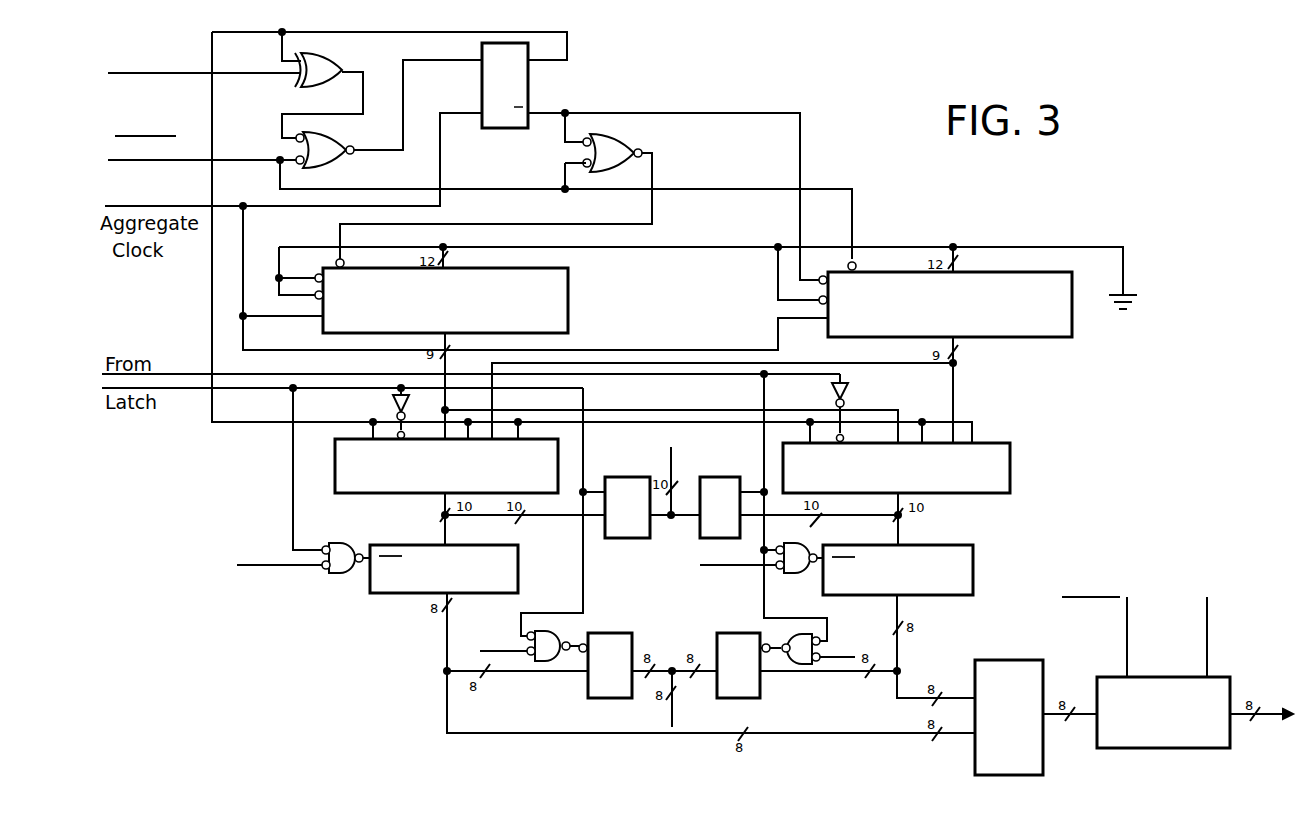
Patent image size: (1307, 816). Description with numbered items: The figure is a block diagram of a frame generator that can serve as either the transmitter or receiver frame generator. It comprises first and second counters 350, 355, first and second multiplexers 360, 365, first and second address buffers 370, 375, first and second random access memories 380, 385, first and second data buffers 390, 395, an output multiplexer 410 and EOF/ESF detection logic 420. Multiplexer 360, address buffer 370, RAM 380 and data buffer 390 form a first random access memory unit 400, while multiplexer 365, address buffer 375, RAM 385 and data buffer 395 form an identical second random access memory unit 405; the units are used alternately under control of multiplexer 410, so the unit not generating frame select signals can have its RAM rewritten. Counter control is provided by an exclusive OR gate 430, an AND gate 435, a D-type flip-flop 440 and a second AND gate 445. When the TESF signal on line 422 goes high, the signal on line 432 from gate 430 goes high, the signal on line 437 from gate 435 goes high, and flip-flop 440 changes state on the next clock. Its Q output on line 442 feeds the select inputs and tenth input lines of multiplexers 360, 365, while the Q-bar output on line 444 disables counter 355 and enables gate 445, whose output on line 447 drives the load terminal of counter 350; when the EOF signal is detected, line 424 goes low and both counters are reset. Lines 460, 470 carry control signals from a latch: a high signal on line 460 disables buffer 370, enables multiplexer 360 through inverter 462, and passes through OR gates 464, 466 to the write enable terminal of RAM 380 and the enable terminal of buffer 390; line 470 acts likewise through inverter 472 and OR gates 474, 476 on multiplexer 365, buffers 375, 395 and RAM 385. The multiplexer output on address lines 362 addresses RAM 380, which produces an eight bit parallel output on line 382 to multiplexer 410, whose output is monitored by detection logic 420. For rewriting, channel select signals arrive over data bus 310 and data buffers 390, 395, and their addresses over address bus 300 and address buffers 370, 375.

The address bus 300 is at (669, 466).
The data bus 310 is at (668, 708).
The first counter 350 is at (568, 300).
The second counter 355 is at (1072, 308).
The first multiplexer 360 is at (366, 493).
The address lines 362 is at (444, 514).
The second multiplexer 365 is at (1010, 468).
The first address buffer 370 is at (625, 484).
The second address buffer 375 is at (726, 484).
The first random access memory 380 is at (518, 574).
The output line 382 is at (445, 706).
The second random access memory 385 is at (973, 574).
The first data buffer 390 is at (614, 637).
The second data buffer 395 is at (741, 640).
The first random access memory unit 400 is at (398, 675).
The second random access memory unit 405 is at (1086, 525).
The multiplexer 410 is at (1018, 632).
The EOF/ESF detection logic 420 is at (1175, 661).
The TESF signal line 422 is at (185, 74).
The TEOF signal line 424 is at (180, 162).
The exclusive OR gate 430 is at (339, 63).
The output line of exclusive OR gate 432 is at (365, 97).
The AND gate 435 is at (348, 142).
The output line of AND gate 437 is at (403, 95).
The D-type flip-flop 440 is at (528, 85).
The Q output line 442 is at (567, 47).
The Q-bar output line 444 is at (628, 113).
The second AND gate 445 is at (636, 141).
The output line of second AND gate 447 is at (653, 178).
The control line 460 is at (187, 392).
The inverter 462 is at (390, 401).
The OR gate 464 is at (346, 574).
The OR gate 466 is at (548, 661).
The control line 470 is at (187, 373).
The inverter 472 is at (848, 388).
The OR gate 474 is at (813, 542).
The OR gate 476 is at (801, 664).